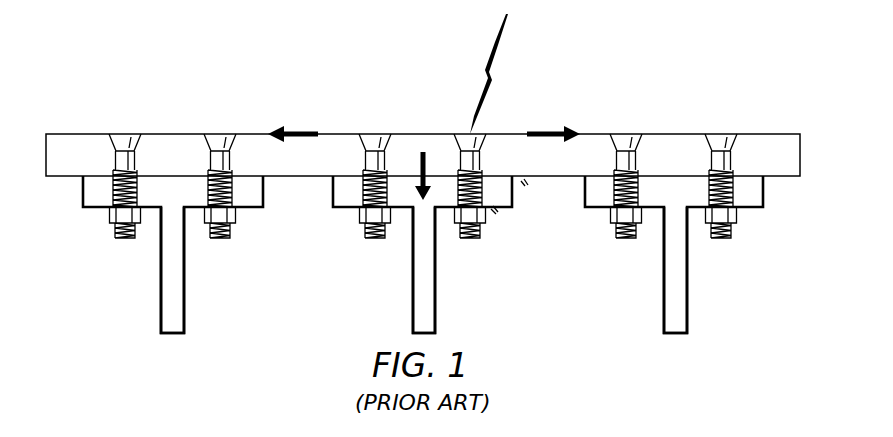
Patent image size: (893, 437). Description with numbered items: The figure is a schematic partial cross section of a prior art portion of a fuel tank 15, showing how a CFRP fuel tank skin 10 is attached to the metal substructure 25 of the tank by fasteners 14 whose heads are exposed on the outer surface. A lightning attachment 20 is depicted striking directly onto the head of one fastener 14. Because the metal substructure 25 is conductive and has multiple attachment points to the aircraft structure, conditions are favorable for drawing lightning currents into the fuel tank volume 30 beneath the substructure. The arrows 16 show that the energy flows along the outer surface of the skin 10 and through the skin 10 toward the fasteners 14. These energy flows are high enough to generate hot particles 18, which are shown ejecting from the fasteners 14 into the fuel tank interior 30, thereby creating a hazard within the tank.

The CFRP fuel tank skin 10 is at (68, 134).
The fastener 14 is at (462, 134).
The fuel tank 15 is at (597, 81).
The arrows 16 is at (298, 131).
The hot particles 18 is at (524, 195).
The lightning attachment 20 is at (492, 42).
The metal substructure 25 is at (412, 285).
The fuel tank volume 30 is at (559, 337).